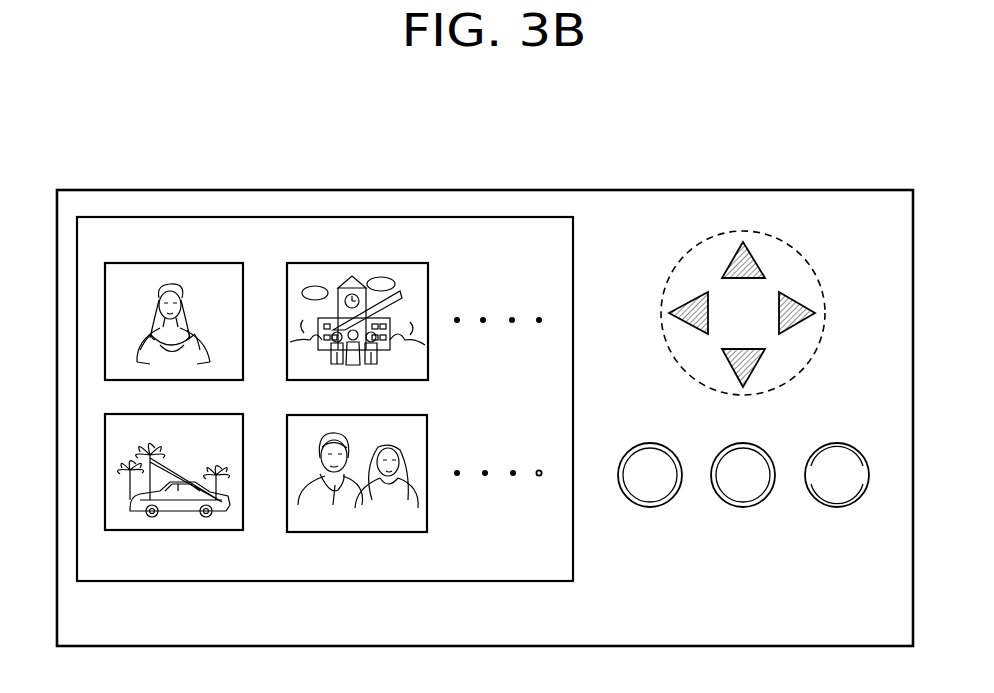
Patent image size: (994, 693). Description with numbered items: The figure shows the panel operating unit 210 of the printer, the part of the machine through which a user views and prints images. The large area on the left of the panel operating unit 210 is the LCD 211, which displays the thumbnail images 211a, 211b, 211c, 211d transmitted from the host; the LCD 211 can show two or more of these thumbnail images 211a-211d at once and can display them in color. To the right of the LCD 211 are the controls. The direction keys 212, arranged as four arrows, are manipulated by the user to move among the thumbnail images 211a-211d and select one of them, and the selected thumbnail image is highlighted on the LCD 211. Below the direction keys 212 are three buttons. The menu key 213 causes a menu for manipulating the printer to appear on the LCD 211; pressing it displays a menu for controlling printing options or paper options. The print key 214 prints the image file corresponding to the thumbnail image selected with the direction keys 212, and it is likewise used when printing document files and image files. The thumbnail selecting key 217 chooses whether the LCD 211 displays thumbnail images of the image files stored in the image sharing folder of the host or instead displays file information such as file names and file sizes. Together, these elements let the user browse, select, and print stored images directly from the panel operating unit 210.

The panel operating unit 210 is at (781, 190).
The LCD 211 is at (467, 581).
The thumbnail image 211a is at (172, 262).
The thumbnail image 211b is at (357, 262).
The thumbnail image 211c is at (173, 532).
The thumbnail image 211d is at (357, 532).
The direction keys 212 is at (826, 313).
The menu key 213 is at (650, 507).
The print key 214 is at (743, 507).
The thumbnail selecting key 217 is at (837, 507).